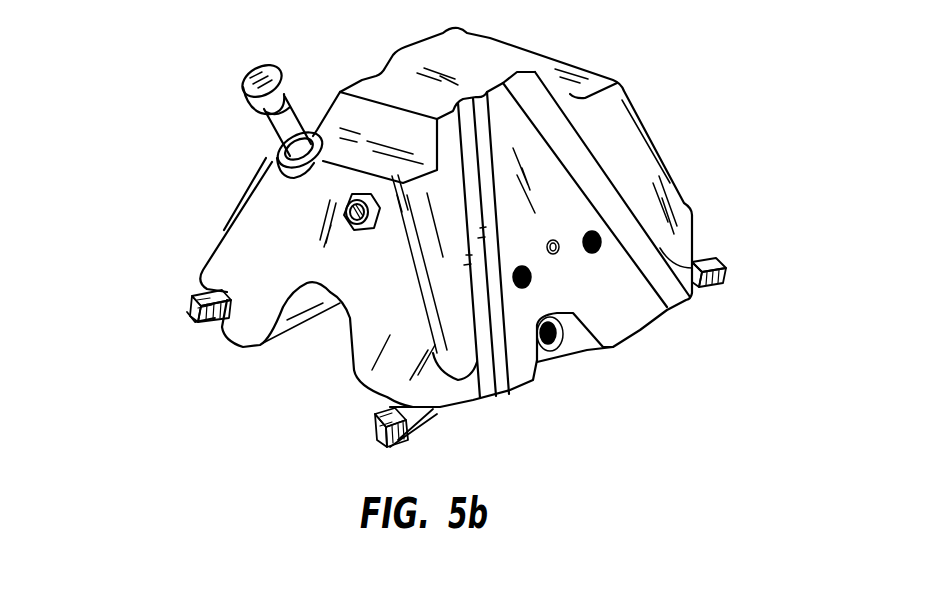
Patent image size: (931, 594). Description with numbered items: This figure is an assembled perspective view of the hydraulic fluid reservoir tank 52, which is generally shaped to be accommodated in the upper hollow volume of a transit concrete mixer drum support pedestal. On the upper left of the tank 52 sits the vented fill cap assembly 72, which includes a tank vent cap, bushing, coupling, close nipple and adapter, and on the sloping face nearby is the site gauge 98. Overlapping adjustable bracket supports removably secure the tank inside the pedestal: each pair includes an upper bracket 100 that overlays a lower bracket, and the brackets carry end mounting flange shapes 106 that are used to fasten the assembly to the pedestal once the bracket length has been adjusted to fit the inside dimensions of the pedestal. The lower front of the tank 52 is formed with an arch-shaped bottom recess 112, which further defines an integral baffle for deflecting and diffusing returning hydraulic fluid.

The hydraulic fluid reservoir tank 52 is at (490, 60).
The vented fill cap assembly 72 is at (268, 132).
The site gauge 98 is at (346, 222).
The upper bracket 100 is at (193, 293).
The end mounting flange shapes 106 is at (187, 313).
The arch-shaped bottom recess 112 is at (327, 333).